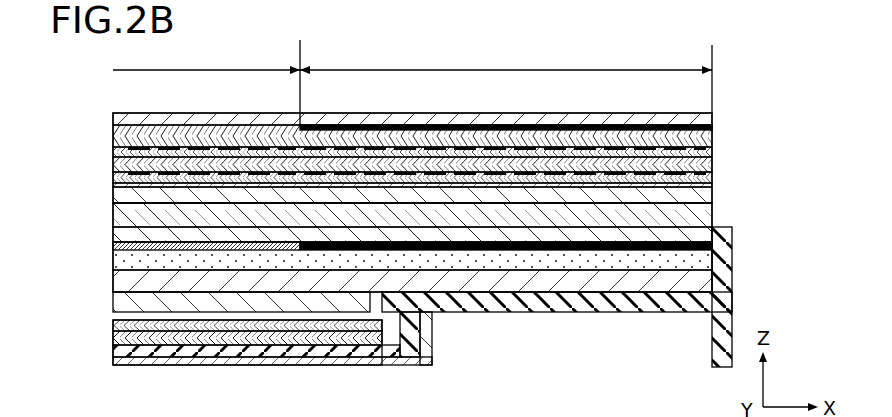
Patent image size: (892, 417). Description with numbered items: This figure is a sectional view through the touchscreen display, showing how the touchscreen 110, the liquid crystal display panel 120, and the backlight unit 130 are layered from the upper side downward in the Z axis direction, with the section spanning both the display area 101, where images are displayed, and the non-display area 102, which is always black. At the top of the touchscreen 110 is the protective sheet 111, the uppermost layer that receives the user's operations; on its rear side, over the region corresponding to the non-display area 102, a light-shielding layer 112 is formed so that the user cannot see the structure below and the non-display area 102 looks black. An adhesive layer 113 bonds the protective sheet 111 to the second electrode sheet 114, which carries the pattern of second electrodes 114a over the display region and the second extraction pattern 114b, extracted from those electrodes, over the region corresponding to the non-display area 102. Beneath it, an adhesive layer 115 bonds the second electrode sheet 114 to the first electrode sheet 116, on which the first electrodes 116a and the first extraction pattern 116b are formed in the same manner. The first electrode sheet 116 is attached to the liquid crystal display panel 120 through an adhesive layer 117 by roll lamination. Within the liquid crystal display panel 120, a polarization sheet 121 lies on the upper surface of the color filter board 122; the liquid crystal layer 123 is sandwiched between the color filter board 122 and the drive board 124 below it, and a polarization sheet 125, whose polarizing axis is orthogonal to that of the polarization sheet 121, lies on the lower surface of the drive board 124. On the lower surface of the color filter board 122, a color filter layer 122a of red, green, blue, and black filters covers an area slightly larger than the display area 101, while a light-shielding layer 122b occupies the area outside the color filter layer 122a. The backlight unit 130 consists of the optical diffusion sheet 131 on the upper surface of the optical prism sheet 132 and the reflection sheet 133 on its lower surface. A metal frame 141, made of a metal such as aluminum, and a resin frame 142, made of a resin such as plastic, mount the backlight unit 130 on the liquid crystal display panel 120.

The display area 101 is at (412, 82).
The non-display area 102 is at (506, 79).
The touchscreen 110 is at (103, 113).
The protective sheet 111 is at (714, 119).
The light-shielding layer 112 is at (714, 128).
The adhesive layer 113 is at (714, 140).
The second electrode sheet 114 is at (714, 152).
The second electrodes 114a is at (168, 146).
The second extraction pattern 114b is at (335, 146).
The adhesive layer 115 is at (714, 165).
The first electrode sheet 116 is at (714, 178).
The first electrodes 116a is at (244, 171).
The first extraction pattern 116b is at (425, 171).
The adhesive layer 117 is at (714, 197).
The liquid crystal display panel 120 is at (103, 208).
The polarization sheet 121 is at (693, 281).
The color filter board 122 is at (633, 252).
The color filter layer 122a is at (297, 250).
The light-shielding layer 122b is at (604, 250).
The liquid crystal layer 123 is at (562, 235).
The drive board 124 is at (500, 215).
The polarization sheet 125 is at (155, 300).
The backlight unit 130 is at (103, 320).
The optical diffusion sheet 131 is at (383, 324).
The optical prism sheet 132 is at (383, 338).
The reflection sheet 133 is at (432, 365).
The metal frame 141 is at (275, 352).
The resin frame 142 is at (732, 295).